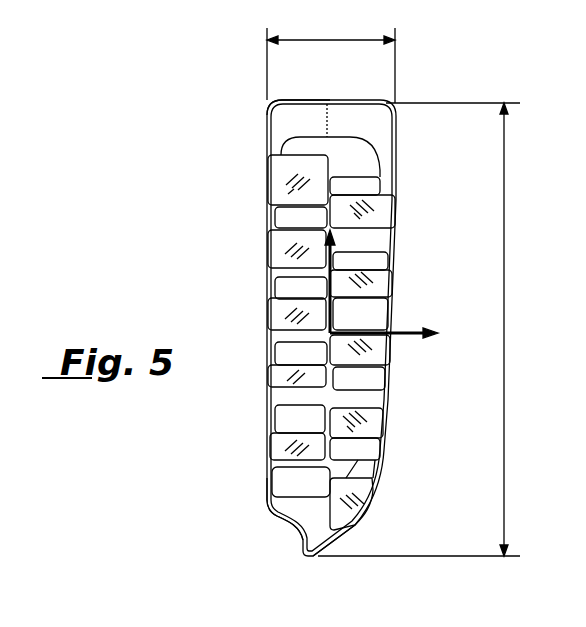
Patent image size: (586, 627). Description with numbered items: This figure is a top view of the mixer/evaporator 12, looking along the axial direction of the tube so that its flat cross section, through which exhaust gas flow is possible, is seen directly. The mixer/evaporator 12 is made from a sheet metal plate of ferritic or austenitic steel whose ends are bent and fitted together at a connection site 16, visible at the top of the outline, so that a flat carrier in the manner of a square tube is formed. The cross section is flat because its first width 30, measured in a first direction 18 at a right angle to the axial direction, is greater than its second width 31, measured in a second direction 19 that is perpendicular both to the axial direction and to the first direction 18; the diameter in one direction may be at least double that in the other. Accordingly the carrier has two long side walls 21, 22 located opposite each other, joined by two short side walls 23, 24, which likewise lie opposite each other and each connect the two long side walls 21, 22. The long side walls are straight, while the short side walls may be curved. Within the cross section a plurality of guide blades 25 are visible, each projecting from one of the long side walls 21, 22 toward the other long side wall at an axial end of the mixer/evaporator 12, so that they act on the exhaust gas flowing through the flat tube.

The mixer/evaporator 12 is at (404, 218).
The connection site 16 is at (343, 118).
The first direction 18 is at (346, 280).
The second direction 19 is at (403, 335).
The long side wall 21 is at (267, 486).
The long side wall 22 is at (384, 455).
The short side wall 23 is at (288, 100).
The short side wall 24 is at (345, 533).
The guide blades 25 is at (284, 174).
The first width 30 is at (431, 329).
The second width 31 is at (331, 58).